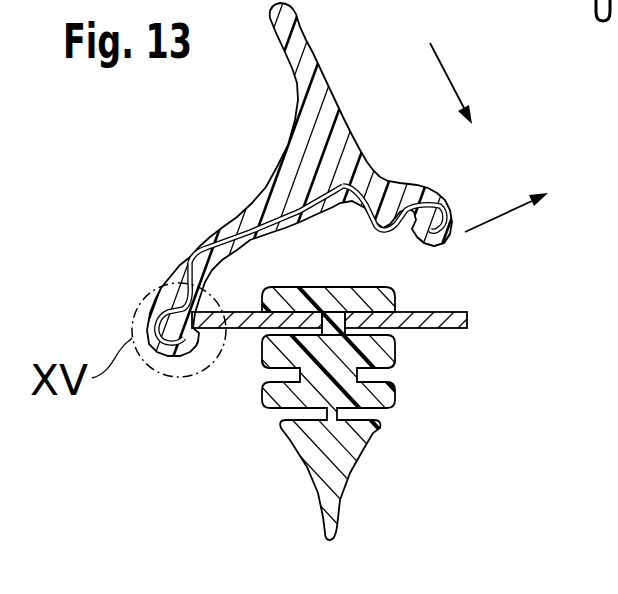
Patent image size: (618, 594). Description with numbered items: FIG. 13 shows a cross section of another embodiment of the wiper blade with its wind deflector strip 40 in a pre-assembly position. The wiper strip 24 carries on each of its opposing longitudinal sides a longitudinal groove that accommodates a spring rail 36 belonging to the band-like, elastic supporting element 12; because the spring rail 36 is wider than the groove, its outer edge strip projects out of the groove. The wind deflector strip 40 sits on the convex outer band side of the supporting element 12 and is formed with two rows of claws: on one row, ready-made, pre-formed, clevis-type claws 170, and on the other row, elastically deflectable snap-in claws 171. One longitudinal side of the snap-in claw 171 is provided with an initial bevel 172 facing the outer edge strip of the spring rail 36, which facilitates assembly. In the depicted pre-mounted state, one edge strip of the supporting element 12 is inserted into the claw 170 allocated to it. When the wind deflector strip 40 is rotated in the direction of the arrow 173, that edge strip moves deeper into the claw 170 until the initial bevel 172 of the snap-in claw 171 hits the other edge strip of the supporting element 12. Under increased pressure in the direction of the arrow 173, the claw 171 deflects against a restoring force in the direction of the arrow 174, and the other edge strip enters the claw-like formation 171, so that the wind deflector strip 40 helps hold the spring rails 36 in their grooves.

The wind deflector strip 40 is at (360, 55).
The supporting element 12 is at (482, 334).
The wiper strip 24 is at (394, 421).
The spring rail 36 is at (244, 332).
The claw 170 is at (148, 323).
The snap-in claw 171 is at (447, 209).
The initial bevel 172 is at (434, 246).
The arrow 173 is at (440, 60).
The arrow 174 is at (493, 223).